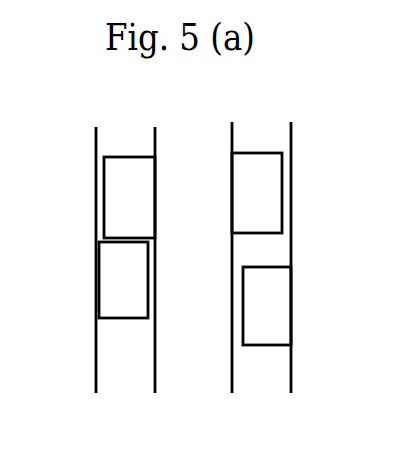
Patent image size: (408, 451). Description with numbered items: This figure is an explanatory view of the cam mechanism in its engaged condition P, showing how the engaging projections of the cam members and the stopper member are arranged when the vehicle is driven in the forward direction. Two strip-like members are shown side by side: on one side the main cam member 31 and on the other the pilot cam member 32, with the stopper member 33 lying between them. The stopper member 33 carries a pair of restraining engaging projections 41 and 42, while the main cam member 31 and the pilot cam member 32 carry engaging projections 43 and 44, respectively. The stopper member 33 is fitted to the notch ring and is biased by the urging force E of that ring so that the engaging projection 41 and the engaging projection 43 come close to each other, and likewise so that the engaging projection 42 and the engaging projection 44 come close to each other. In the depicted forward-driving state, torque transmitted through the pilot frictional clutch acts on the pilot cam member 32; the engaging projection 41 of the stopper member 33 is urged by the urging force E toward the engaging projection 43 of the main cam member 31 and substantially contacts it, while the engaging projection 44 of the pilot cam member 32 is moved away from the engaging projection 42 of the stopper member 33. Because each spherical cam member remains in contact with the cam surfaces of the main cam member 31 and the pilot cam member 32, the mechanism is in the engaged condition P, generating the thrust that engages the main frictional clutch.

The engaged condition P is at (83, 127).
The main cam member 31 is at (96, 213).
The pilot cam member 32 is at (291, 243).
The stopper member 33 is at (194, 162).
The engaging projection 41 is at (134, 159).
The engaging projection 42 is at (250, 158).
The engaging projection 43 is at (120, 313).
The engaging projection 44 is at (267, 337).
The urging force E is at (195, 210).